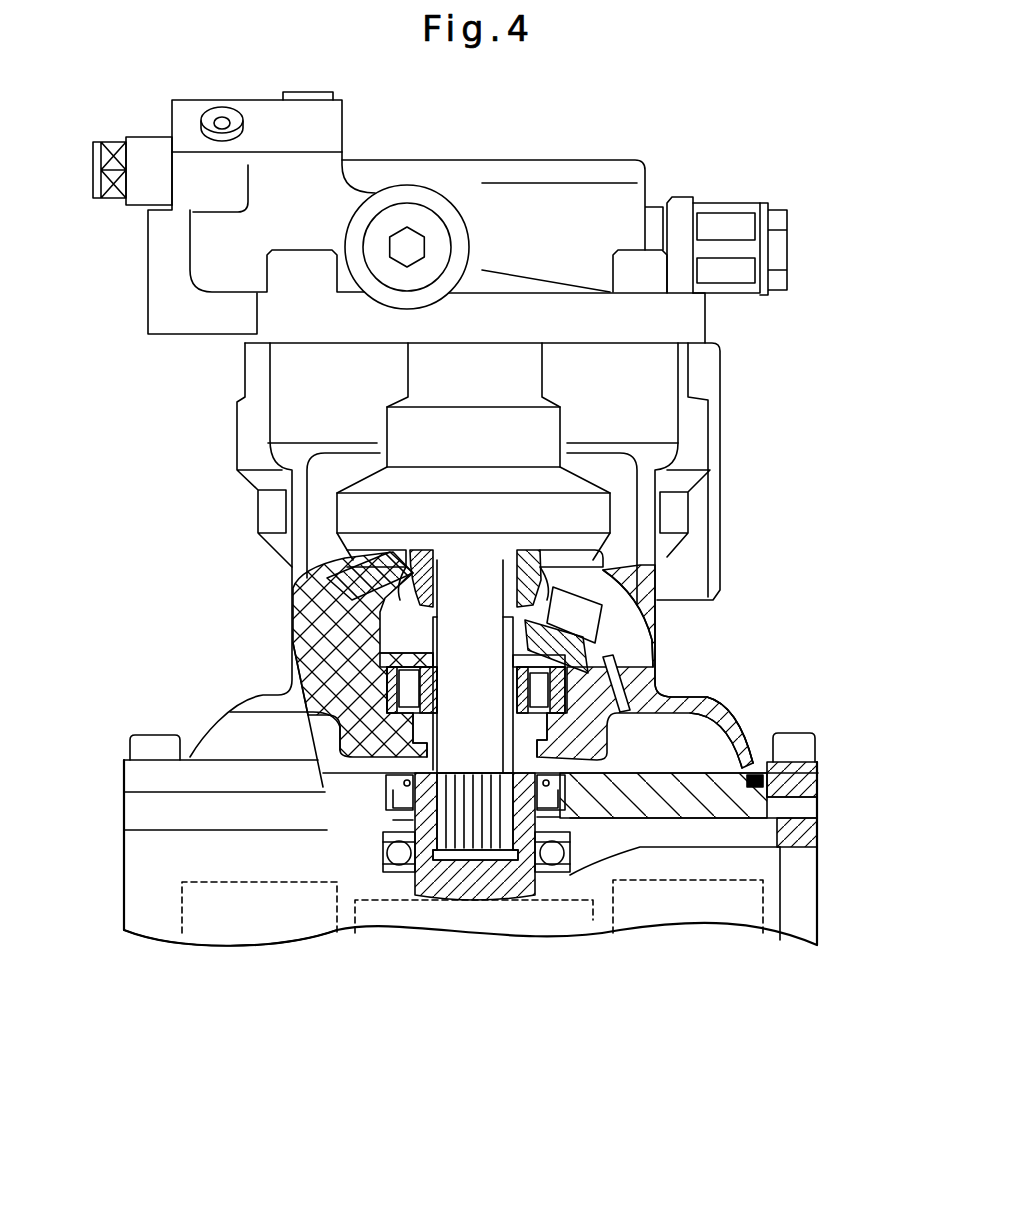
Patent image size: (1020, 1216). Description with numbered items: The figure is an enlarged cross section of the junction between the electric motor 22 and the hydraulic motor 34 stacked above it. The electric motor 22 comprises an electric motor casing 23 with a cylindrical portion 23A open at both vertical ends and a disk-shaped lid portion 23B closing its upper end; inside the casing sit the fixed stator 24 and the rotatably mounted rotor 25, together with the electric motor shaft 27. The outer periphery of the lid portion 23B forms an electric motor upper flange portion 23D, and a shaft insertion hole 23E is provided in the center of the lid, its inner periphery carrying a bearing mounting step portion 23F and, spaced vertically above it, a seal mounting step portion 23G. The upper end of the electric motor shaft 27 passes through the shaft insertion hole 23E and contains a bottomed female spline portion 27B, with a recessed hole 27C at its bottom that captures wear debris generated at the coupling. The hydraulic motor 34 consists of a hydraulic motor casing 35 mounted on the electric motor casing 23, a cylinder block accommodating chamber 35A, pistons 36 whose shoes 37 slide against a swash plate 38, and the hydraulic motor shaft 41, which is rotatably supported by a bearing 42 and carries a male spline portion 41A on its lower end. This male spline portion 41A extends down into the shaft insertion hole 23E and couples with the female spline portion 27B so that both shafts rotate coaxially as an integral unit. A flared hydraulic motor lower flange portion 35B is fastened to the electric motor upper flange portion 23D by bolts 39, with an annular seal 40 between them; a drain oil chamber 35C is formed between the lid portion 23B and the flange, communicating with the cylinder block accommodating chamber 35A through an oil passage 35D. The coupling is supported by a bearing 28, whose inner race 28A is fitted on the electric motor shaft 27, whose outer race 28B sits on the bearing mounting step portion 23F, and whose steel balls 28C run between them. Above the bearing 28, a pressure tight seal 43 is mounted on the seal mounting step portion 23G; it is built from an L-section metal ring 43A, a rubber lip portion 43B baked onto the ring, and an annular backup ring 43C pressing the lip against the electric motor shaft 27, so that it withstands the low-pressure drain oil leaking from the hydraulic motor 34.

The electric motor 22 is at (252, 950).
The electric motor casing 23 is at (122, 903).
The cylindrical portion 23A is at (782, 915).
The lid portion 23B is at (693, 790).
The electric motor upper flange portion 23D is at (797, 829).
The shaft insertion hole 23E is at (385, 828).
The bearing mounting step portion 23F is at (373, 848).
The seal mounting step portion 23G is at (374, 789).
The stator 24 is at (212, 915).
The rotor 25 is at (375, 905).
The electric motor shaft 27 is at (523, 887).
The female spline portion 27B is at (498, 830).
The recessed hole 27C is at (473, 862).
The bearing 28 is at (376, 884).
The inner race 28A is at (402, 870).
The outer race 28B is at (390, 878).
The steel balls 28C is at (553, 862).
The hydraulic motor 34 is at (226, 378).
The hydraulic motor casing 35 is at (322, 607).
The cylinder block accommodating chamber 35A is at (612, 619).
The hydraulic motor lower flange portion 35B is at (795, 790).
The drain oil chamber 35C is at (694, 750).
The oil passage 35D is at (614, 669).
The pistons 36 is at (573, 559).
The shoes 37 is at (569, 613).
The swash plate 38 is at (345, 590).
The bolts 39 is at (152, 748).
The annular seal 40 is at (750, 800).
The hydraulic motor shaft 41 is at (472, 566).
The male spline portion 41A is at (395, 660).
The bearing 42 is at (407, 688).
The pressure tight seal 43 is at (290, 752).
The metal ring 43A is at (648, 832).
The lip portion 43B is at (472, 790).
The backup ring 43C is at (653, 681).